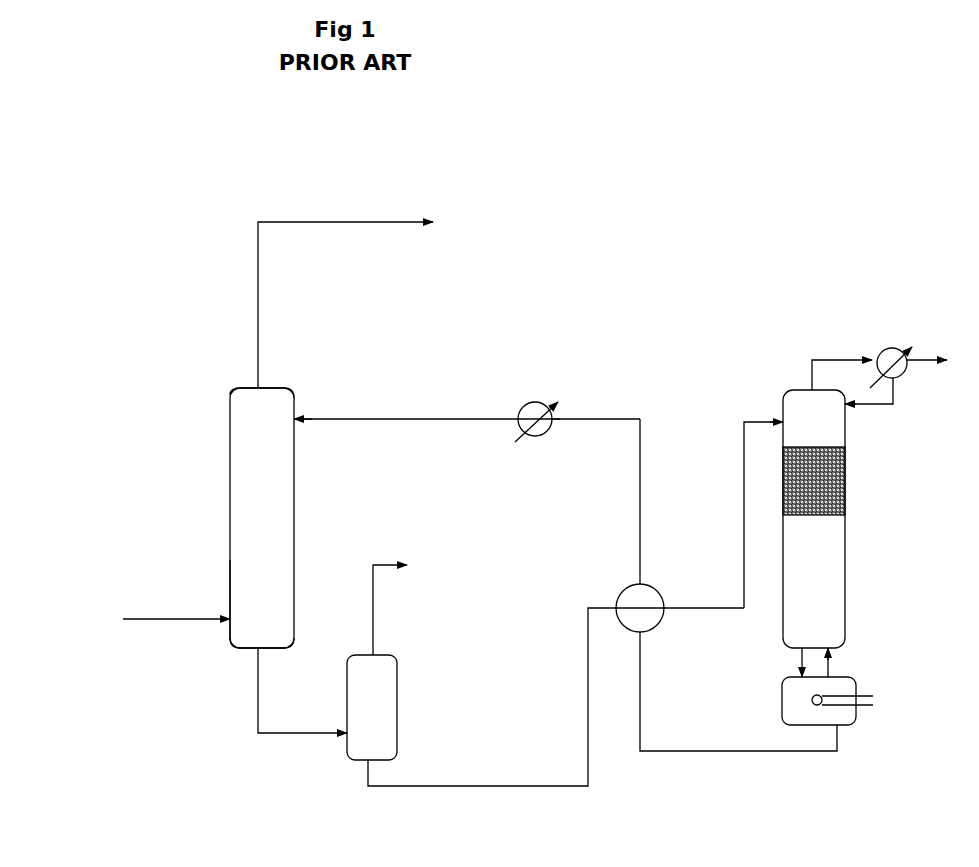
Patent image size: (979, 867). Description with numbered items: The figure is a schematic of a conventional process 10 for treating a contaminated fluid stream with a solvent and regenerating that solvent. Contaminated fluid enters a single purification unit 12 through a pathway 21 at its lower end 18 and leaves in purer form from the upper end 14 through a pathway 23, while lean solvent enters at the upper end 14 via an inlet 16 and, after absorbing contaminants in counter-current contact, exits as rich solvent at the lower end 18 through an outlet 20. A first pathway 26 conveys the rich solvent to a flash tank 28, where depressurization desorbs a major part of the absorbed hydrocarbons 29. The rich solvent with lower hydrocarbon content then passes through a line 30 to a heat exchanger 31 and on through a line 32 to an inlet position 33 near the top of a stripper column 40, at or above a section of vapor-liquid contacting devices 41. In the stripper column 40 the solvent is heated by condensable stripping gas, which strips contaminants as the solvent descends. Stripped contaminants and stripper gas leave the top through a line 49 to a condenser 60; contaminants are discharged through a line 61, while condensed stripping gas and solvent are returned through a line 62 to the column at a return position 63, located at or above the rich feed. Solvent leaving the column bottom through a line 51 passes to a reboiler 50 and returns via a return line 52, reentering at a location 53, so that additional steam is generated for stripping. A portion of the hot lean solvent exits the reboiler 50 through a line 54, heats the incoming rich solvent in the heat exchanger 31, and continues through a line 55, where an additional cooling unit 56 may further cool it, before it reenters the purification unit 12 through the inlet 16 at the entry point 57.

The process system 10 is at (576, 272).
The purification unit 12 is at (230, 470).
The upper end 14 is at (252, 415).
The inlet 16 is at (297, 408).
The lower end 18 is at (262, 622).
The outlet 20 is at (257, 650).
The pathway 21 is at (133, 618).
The pathway 23 is at (259, 312).
The first pathway 26 is at (277, 737).
The flash tank 28 is at (360, 690).
The absorbed hydrocarbons 29 is at (372, 607).
The line 30 is at (473, 790).
The heat exchanger 31 is at (657, 588).
The first pathway 32 is at (743, 525).
The inlet position 33 is at (780, 418).
The stripper column 40 is at (808, 407).
The vapor-liquid contacting device section 41 is at (820, 470).
The line 49 is at (825, 357).
The reboiler 50 is at (800, 702).
The line 51 is at (798, 662).
The return line 52 is at (832, 668).
The location 53 is at (828, 647).
The line 54 is at (713, 750).
The line 55 is at (639, 528).
The cooling unit 56 is at (526, 404).
The recycle inlet 57 is at (313, 422).
The condenser 60 is at (890, 347).
The line 61 is at (922, 352).
The line 62 is at (893, 398).
The return position 63 is at (845, 418).